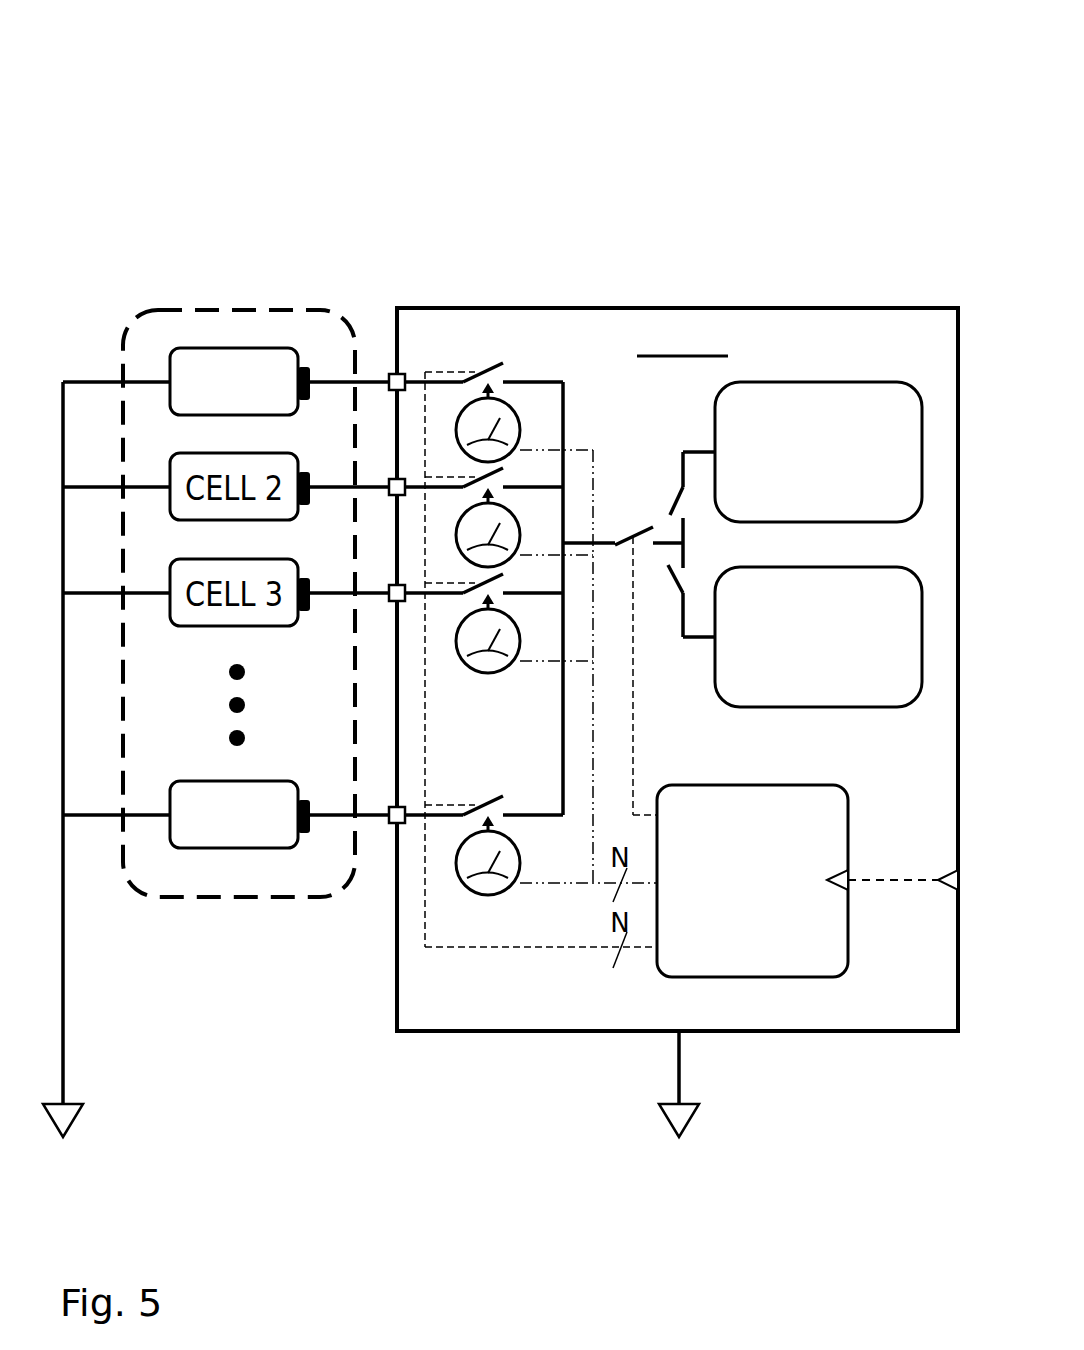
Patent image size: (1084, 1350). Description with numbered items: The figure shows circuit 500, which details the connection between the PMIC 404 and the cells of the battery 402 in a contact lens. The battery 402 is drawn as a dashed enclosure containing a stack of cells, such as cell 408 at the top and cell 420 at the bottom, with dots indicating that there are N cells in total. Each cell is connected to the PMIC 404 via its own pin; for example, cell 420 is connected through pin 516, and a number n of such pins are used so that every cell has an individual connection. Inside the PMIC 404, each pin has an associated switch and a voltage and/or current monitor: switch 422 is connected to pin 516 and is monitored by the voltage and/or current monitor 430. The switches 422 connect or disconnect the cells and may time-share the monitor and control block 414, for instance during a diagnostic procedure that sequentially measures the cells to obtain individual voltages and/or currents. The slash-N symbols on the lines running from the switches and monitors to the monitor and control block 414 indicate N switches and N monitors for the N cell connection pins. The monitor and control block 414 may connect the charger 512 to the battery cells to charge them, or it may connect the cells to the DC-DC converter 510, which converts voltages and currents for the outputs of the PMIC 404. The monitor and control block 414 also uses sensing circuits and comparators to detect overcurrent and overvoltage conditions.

The circuit 500 is at (506, 63).
The battery 402 is at (283, 308).
The cell 408 is at (188, 362).
The cell 420 is at (217, 850).
The PMIC 404 is at (638, 308).
The pin 516 is at (394, 826).
The switch 422 is at (488, 802).
The voltage and/or current monitor 430 is at (488, 895).
The monitor and control block 414 is at (848, 822).
The charger 512 is at (792, 510).
The DC-DC converter 510 is at (843, 692).